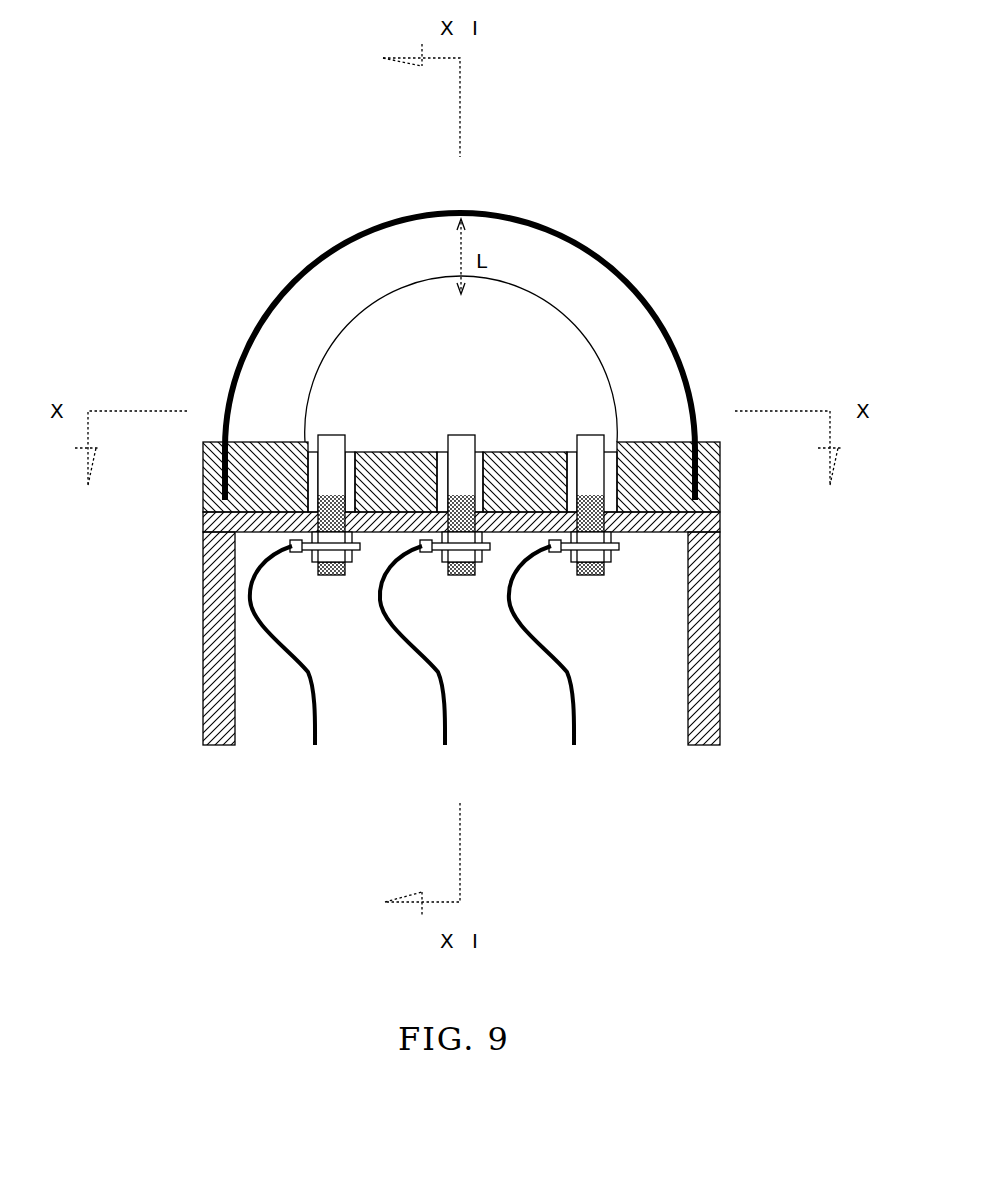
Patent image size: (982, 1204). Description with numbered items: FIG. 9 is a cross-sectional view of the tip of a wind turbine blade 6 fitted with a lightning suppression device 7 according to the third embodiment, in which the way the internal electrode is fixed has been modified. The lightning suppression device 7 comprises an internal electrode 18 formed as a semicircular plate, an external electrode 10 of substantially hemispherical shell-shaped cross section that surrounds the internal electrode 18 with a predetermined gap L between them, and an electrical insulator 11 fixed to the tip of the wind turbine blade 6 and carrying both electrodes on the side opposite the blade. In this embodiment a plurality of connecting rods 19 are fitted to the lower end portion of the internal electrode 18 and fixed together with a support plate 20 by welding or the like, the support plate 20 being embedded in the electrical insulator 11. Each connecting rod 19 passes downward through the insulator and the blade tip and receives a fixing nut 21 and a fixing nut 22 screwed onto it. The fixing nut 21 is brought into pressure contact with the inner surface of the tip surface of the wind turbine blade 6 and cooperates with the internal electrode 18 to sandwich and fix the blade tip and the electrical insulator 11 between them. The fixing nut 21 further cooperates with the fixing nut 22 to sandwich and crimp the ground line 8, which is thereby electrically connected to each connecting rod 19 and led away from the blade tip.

The wind turbine blade 6 is at (203, 676).
The lightning suppression device 7 is at (472, 335).
The ground line 8 is at (572, 703).
The external electrode 10 is at (262, 312).
The electrical insulator 11 is at (203, 485).
The internal electrode 18 is at (375, 365).
The connecting rod 19 is at (593, 578).
The support plate 20 is at (612, 456).
The fixing nut 21 is at (612, 544).
The fixing nut 22 is at (606, 556).